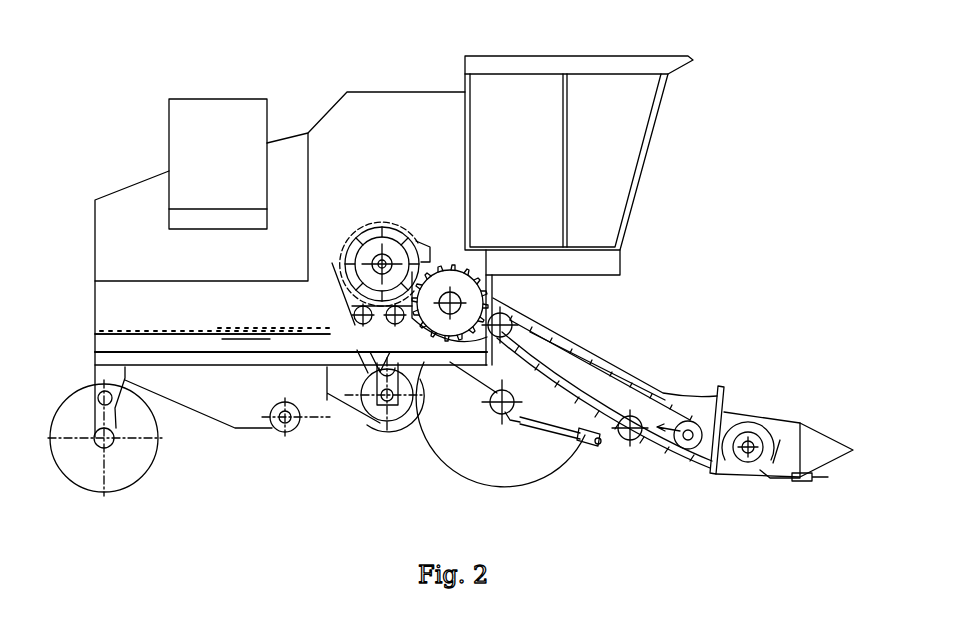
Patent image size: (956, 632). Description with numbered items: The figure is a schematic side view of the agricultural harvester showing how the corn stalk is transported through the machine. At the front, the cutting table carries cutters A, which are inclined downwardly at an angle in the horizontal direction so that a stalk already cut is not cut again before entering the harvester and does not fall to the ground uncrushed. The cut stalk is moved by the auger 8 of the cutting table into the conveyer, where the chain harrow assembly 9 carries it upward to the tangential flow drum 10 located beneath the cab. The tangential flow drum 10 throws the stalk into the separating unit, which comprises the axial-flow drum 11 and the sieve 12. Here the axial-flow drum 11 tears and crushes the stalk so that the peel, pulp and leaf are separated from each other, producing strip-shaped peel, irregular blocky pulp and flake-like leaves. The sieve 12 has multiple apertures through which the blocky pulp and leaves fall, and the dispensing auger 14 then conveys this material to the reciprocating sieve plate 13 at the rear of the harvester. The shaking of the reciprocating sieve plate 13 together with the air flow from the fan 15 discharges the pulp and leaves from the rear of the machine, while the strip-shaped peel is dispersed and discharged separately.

The auger of the cutting table 8 is at (760, 473).
The chain harrow assembly 9 is at (655, 453).
The tangential flow drum 10 is at (462, 287).
The axial-flow drum 11 is at (392, 248).
The sieve 12 is at (350, 268).
The reciprocating sieve plate 13 is at (127, 320).
The dispensing auger 14 is at (360, 325).
The fan 15 is at (385, 405).
The cutters A is at (803, 477).